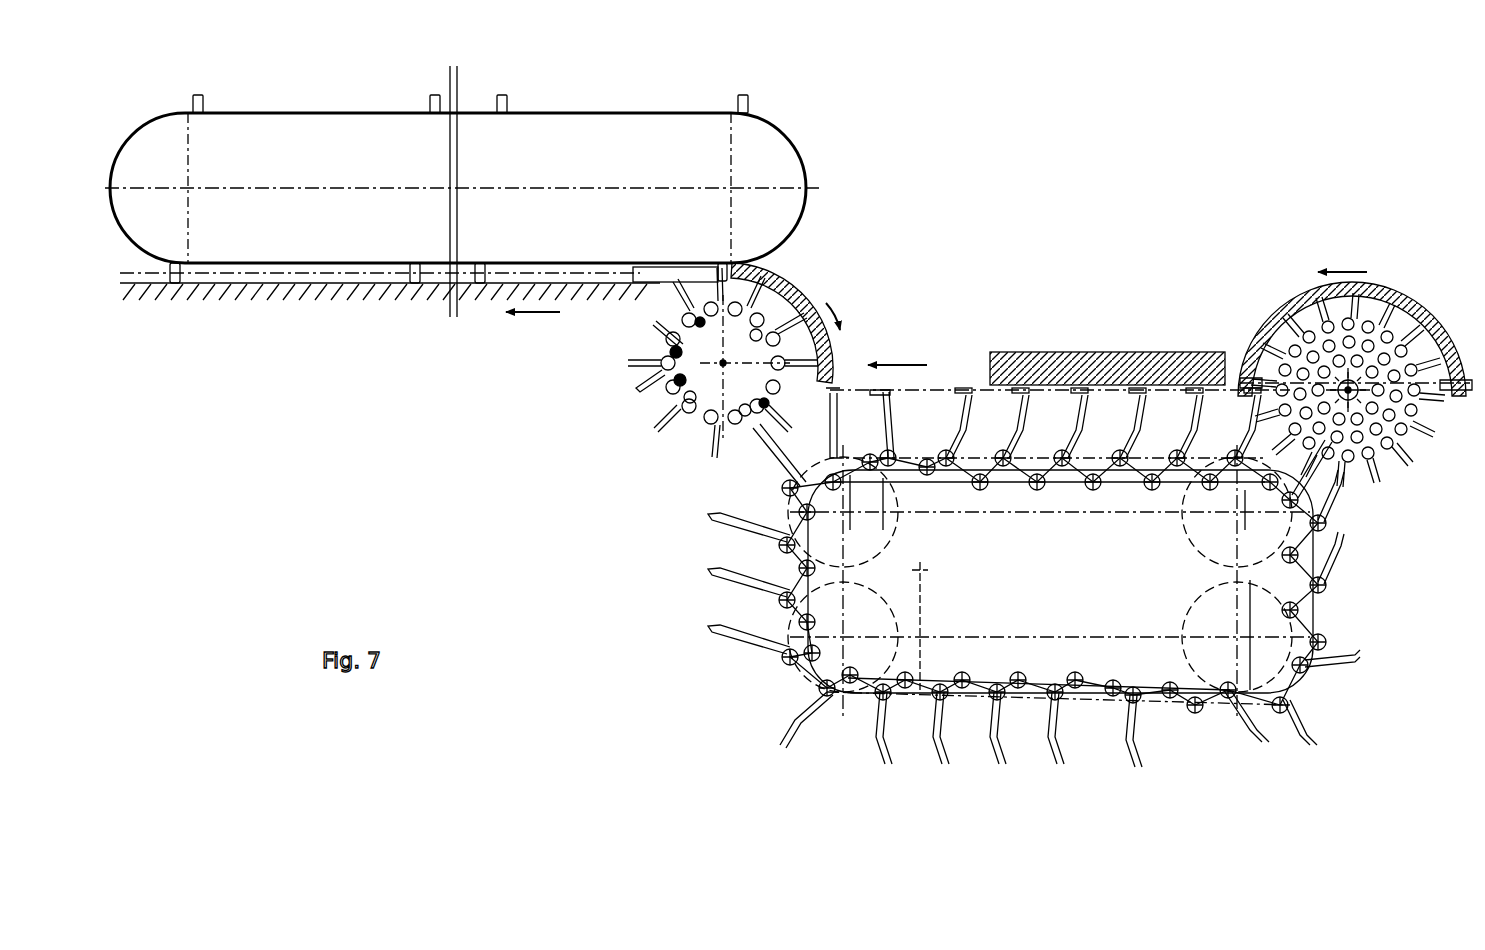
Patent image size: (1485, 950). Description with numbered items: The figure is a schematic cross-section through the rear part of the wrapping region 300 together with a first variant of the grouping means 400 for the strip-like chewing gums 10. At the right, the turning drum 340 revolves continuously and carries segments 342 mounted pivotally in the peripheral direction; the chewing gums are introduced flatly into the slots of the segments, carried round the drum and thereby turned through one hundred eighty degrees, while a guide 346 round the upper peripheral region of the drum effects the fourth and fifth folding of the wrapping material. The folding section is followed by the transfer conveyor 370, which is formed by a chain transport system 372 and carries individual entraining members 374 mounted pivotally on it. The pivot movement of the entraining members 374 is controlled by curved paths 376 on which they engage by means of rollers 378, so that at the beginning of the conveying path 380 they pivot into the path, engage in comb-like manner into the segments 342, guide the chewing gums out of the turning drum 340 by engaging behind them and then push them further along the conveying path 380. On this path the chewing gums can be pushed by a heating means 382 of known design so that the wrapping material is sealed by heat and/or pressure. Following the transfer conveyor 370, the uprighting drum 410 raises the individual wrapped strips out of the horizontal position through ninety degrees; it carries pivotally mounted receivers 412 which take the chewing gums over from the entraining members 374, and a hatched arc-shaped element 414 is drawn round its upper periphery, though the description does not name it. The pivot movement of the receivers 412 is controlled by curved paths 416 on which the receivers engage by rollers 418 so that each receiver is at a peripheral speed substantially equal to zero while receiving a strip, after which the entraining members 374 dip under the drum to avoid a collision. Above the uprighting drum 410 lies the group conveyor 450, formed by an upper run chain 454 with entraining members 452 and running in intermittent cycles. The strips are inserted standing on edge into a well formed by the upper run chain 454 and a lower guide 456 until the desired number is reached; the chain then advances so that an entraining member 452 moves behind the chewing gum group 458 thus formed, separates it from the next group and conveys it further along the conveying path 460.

The chewing gum 10 is at (967, 392).
The wrapping region 300 is at (1345, 235).
The turning drum 340 is at (1310, 330).
The segments 342 is at (1295, 352).
The guide 346 is at (1400, 297).
The transfer conveyor 370 is at (1035, 782).
The chain transport system 372 is at (800, 682).
The entraining members 374 is at (868, 752).
The curved paths 376 is at (890, 696).
The rollers 378 is at (787, 623).
The conveying path 380 is at (940, 390).
The heating means 382 is at (1062, 366).
The grouping means 400 is at (795, 97).
The uprighting drum 410 is at (707, 382).
The receivers 412 is at (667, 427).
The guide arc 414 is at (840, 356).
The curved paths 416 is at (690, 397).
The rollers 418 is at (707, 363).
The group conveyor 450 is at (806, 170).
The entraining members 452 is at (738, 97).
The upper run chain 454 is at (800, 224).
The lower guide 456 is at (358, 290).
The chewing gum group 458 is at (640, 300).
The conveying path 460 is at (297, 275).